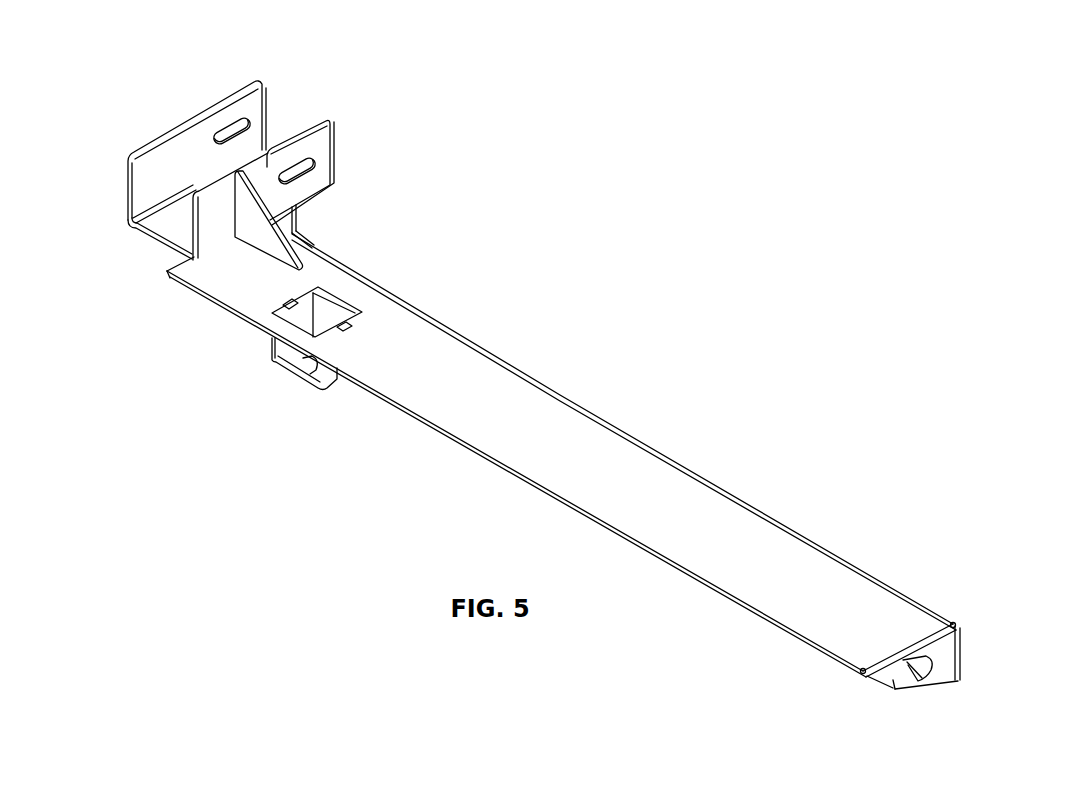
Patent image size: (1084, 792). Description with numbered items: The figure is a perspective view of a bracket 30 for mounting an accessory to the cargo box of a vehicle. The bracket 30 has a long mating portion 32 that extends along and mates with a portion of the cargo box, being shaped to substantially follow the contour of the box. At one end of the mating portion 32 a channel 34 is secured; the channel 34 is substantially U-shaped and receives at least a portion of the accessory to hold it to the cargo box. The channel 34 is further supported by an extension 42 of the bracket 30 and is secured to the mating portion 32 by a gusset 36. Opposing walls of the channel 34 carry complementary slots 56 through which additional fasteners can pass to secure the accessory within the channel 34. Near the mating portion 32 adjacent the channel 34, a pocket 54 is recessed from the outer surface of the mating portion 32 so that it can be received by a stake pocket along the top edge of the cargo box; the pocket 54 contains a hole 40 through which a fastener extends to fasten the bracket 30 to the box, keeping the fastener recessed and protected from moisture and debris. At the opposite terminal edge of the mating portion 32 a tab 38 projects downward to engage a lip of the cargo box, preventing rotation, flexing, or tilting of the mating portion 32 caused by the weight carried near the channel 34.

The bracket 30 is at (510, 338).
The mating portion 32 is at (597, 455).
The channel 34 is at (183, 222).
The gusset 36 is at (257, 235).
The tab 38 is at (903, 670).
The hole 40 is at (315, 370).
The extension 42 is at (283, 225).
The pocket 54 is at (288, 357).
The slots 56 is at (237, 133).